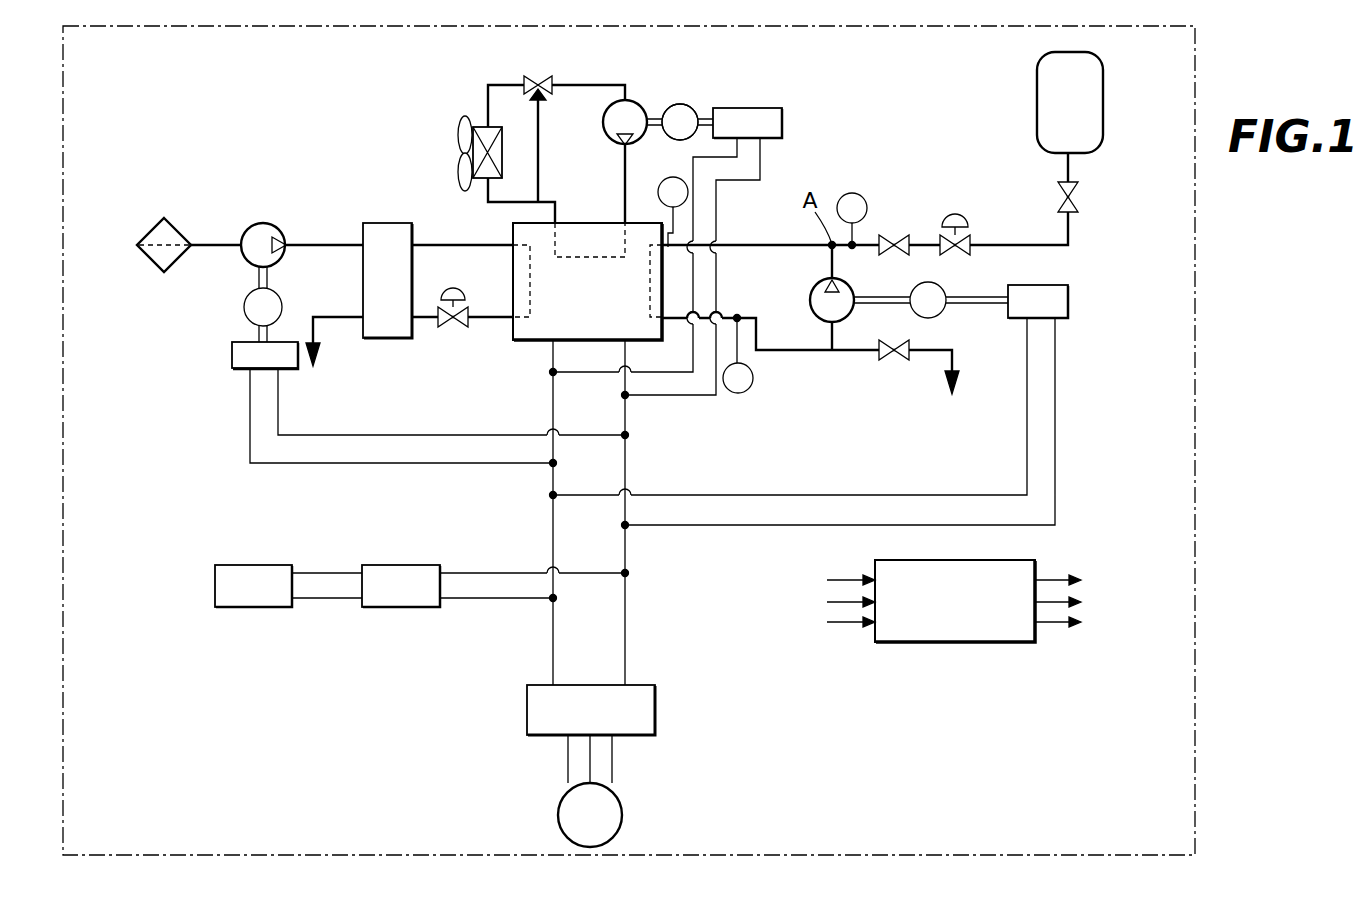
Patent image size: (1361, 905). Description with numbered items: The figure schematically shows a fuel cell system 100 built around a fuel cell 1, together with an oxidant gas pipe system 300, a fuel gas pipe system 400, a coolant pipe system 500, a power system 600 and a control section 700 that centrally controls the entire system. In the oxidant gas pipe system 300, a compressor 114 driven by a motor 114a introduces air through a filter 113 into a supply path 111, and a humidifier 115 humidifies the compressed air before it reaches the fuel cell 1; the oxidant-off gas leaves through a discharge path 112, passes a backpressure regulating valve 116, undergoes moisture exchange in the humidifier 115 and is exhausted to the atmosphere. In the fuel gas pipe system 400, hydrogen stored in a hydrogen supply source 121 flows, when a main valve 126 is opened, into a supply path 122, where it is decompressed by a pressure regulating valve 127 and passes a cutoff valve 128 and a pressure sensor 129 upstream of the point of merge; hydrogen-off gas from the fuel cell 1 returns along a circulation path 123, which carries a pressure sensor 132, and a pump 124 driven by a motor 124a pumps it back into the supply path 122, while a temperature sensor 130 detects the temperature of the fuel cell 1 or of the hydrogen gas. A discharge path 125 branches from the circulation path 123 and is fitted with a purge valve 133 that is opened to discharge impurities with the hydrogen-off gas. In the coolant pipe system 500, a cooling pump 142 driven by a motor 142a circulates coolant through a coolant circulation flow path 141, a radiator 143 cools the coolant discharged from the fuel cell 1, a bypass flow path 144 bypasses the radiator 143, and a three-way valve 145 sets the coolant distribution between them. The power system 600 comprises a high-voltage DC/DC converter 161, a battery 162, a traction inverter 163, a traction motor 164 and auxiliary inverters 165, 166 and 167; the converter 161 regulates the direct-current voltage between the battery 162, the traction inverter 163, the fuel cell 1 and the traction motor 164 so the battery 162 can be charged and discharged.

The fuel cell system 100 is at (1196, 86).
The fuel cell 1 is at (520, 340).
The supply path 111 is at (438, 244).
The discharge path 112 is at (340, 320).
The filter 113 is at (176, 230).
The compressor 114 is at (262, 222).
The motor 114a is at (243, 307).
The humidifier 115 is at (390, 340).
The backpressure regulating valve 116 is at (458, 330).
The hydrogen supply source 121 is at (1104, 98).
The supply path 122 is at (1072, 228).
The circulation path 123 is at (795, 352).
The pump 124 is at (811, 296).
The motor 124a is at (911, 290).
The discharge path 125 is at (955, 350).
The main valve 126 is at (1080, 190).
The pressure regulating valve 127 is at (968, 238).
The cutoff valve 128 is at (890, 236).
The pressure sensor 129 is at (851, 192).
The temperature sensor 130 is at (661, 188).
The pressure sensor 132 is at (750, 388).
The purge valve 133 is at (896, 360).
The coolant circulation flow path 141 is at (598, 82).
The cooling pump 142 is at (645, 102).
The motor 142a is at (690, 108).
The radiator 143 is at (457, 150).
The bypass flow path 144 is at (540, 165).
The three-way valve 145 is at (536, 75).
The high-voltage DC/DC converter 161 is at (400, 565).
The battery 162 is at (258, 565).
The traction inverter 163 is at (656, 690).
The traction motor 164 is at (622, 800).
The auxiliary inverter 165 is at (231, 355).
The auxiliary inverter 166 is at (1070, 300).
The auxiliary inverter 167 is at (784, 120).
The oxidant gas pipe system 300 is at (312, 203).
The fuel gas pipe system 400 is at (977, 188).
The coolant pipe system 500 is at (429, 76).
The power system 600 is at (677, 463).
The control section 700 is at (950, 645).